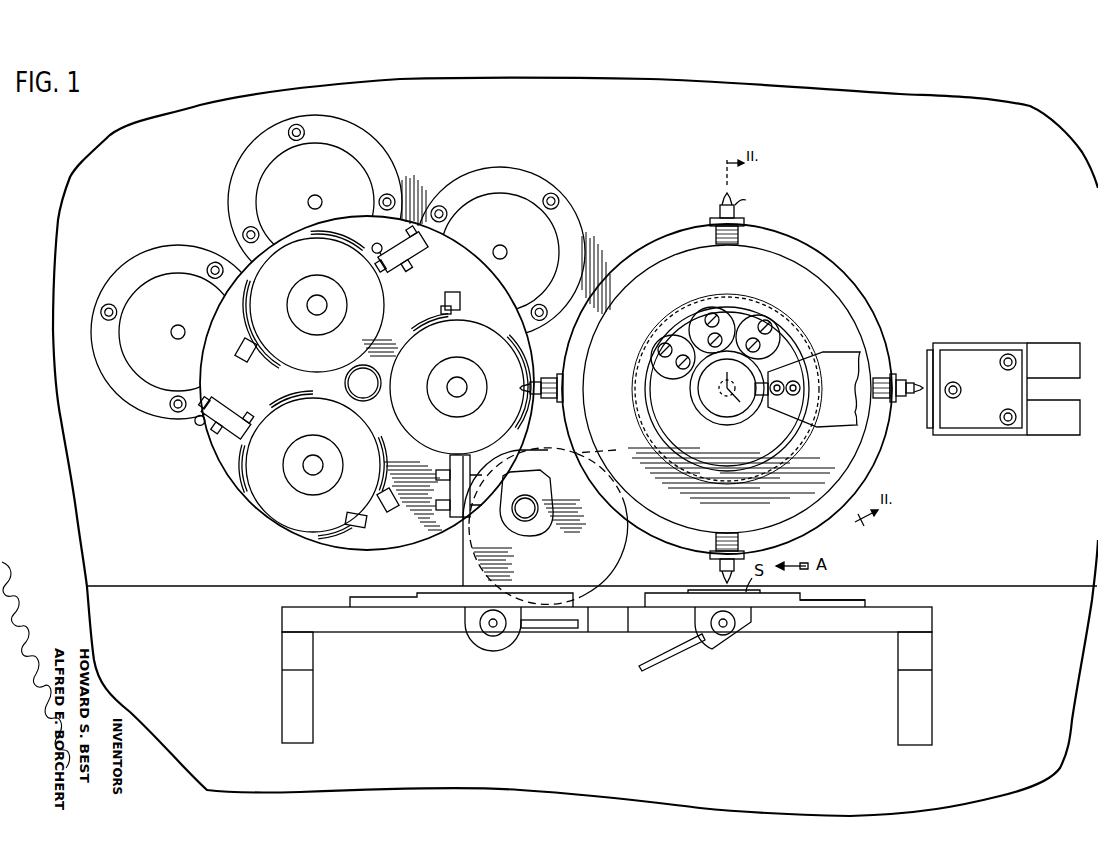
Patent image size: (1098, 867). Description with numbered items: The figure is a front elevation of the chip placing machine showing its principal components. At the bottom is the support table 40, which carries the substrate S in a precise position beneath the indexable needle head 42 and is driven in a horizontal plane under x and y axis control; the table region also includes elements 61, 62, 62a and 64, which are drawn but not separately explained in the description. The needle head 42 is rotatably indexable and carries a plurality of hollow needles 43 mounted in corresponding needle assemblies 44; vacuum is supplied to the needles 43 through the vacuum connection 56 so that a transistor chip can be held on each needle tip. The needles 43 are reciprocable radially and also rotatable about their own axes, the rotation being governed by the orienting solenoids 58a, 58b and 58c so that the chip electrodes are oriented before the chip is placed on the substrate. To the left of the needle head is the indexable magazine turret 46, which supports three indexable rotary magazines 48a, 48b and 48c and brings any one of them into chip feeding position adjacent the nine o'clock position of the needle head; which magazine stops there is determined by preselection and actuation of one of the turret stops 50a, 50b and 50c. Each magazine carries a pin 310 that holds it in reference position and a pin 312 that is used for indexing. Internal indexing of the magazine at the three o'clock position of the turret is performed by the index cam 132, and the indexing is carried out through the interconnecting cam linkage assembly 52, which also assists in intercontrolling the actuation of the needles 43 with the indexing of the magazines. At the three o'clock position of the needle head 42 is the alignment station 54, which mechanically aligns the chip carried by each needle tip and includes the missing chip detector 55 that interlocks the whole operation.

The support table 40 is at (838, 598).
The needle head 42 is at (812, 248).
The needles 43 is at (726, 203).
The needle assemblies 44 is at (770, 200).
The magazine turret 46 is at (206, 464).
The rotary magazine 48a is at (310, 434).
The rotary magazine 48b is at (450, 356).
The rotary magazine 48c is at (319, 266).
The turret stop 50a is at (183, 278).
The turret stop 50b is at (353, 150).
The turret stop 50c is at (498, 200).
The cam linkage assembly 52 is at (488, 528).
The alignment station 54 is at (918, 370).
The missing chip detector 55 is at (1030, 392).
The vacuum connection 56 is at (774, 402).
The orienting solenoid 58a is at (660, 338).
The orienting solenoid 58b is at (707, 306).
The orienting solenoid 58c is at (762, 320).
The base 61 is at (976, 521).
The pivot 62 is at (757, 623).
The pivot 62a is at (523, 641).
The lever 64 is at (713, 646).
The index cam 132 is at (540, 503).
The pin 310 is at (458, 308).
The pin 312 is at (455, 460).